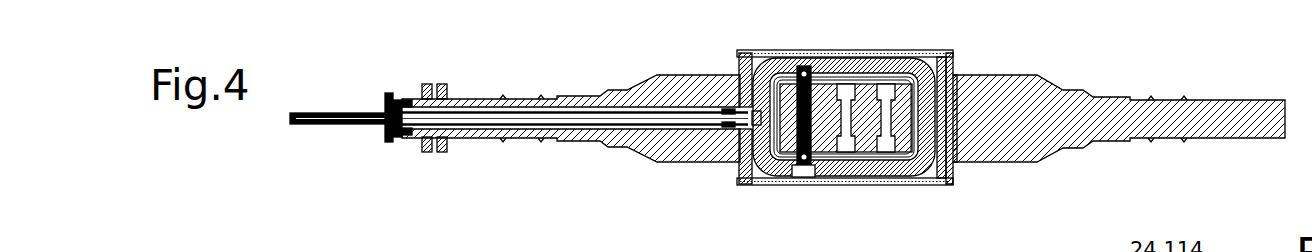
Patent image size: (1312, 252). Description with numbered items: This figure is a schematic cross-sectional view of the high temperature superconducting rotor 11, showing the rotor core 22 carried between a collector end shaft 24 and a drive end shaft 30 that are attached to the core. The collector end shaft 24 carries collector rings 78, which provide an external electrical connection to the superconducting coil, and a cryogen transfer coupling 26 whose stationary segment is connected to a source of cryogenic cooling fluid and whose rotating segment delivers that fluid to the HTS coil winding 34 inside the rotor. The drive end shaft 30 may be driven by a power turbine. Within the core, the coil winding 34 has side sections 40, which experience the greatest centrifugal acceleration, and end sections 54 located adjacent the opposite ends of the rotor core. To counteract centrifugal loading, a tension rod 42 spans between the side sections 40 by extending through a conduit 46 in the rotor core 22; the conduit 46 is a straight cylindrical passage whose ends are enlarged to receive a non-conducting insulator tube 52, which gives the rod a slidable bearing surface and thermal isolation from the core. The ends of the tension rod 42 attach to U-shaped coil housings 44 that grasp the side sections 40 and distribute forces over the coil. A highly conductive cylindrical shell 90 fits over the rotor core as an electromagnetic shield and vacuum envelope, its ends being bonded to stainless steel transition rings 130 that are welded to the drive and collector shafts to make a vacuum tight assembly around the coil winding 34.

The connector assembly 11 is at (943, 35).
The rotor core 22 is at (800, 66).
The collector end shaft 24 is at (622, 96).
The cryogen transfer coupling 26 is at (362, 113).
The drive end shaft 30 is at (1023, 145).
The HTS coil winding 34 is at (834, 61).
The side sections of the coil 40 is at (899, 180).
The tension rod 42 is at (769, 63).
The coil housing 44 is at (786, 178).
The conduits 46 is at (884, 84).
The insulator tube 52 is at (814, 158).
The end sections of the coil winding 54 is at (944, 70).
The collector rings 78 is at (433, 84).
The cylindrical shell 90 is at (767, 185).
The transition rings 130 is at (742, 53).